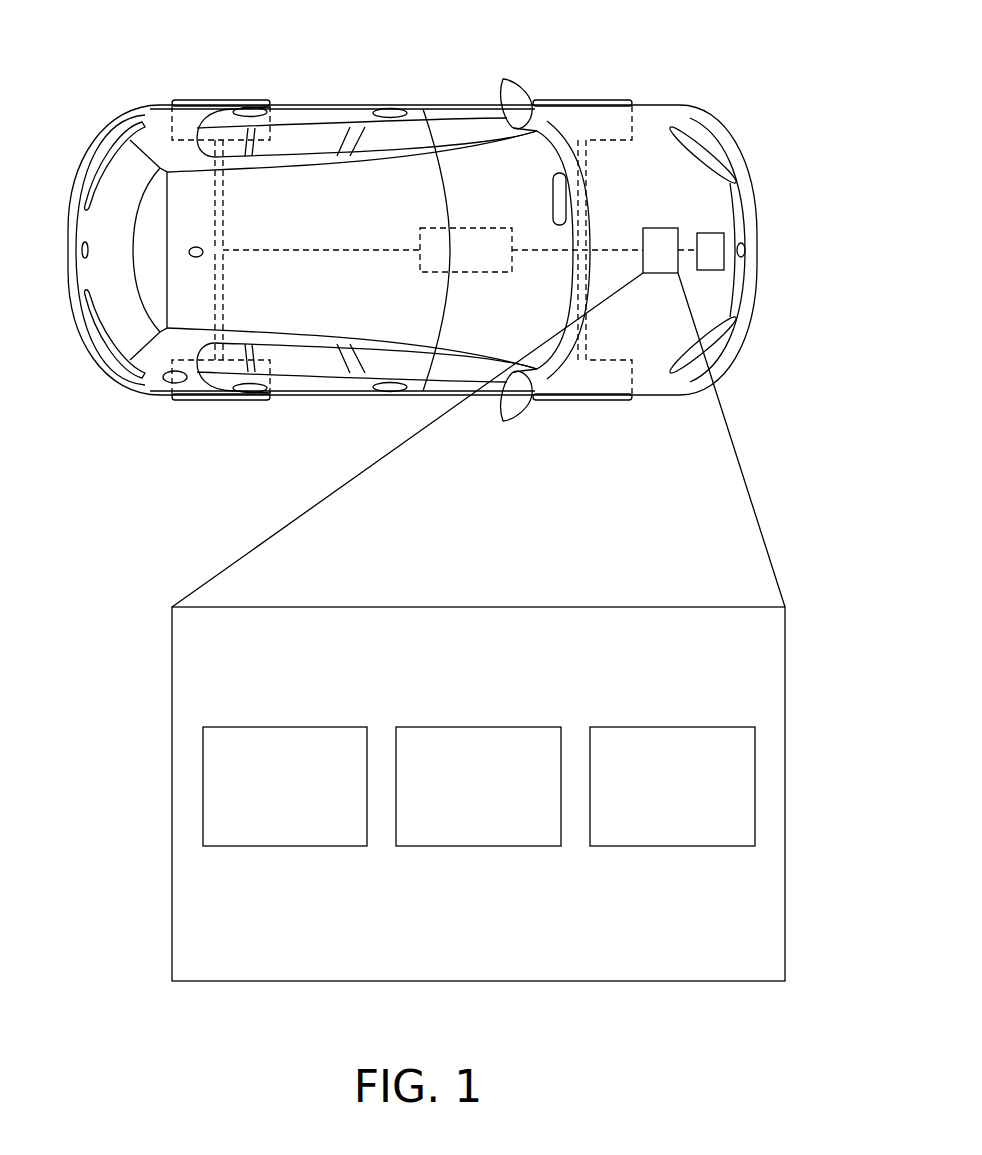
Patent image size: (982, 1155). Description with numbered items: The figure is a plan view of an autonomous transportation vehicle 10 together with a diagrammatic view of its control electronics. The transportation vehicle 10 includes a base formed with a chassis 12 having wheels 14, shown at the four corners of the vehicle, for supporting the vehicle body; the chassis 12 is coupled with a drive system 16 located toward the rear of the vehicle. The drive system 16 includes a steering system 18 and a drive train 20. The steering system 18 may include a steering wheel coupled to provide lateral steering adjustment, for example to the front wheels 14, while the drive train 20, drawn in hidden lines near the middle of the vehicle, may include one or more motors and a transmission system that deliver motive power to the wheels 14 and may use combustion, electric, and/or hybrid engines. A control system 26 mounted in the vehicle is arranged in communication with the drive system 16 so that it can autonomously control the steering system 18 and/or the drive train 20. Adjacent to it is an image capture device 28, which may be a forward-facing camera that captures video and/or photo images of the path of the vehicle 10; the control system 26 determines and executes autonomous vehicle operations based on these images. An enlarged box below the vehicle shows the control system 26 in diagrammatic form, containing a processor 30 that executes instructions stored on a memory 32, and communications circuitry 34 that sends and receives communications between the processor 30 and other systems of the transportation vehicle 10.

The transportation vehicle 10 is at (435, 493).
The chassis 12 is at (316, 100).
The wheels 14 is at (188, 102).
The drive system 16 is at (628, 176).
The steering system 18 is at (572, 170).
The drive train 20 is at (420, 220).
The control system 26 is at (443, 579).
The image capture device 28 is at (723, 237).
The processor 30 is at (310, 727).
The memory 32 is at (511, 727).
The communications circuitry 34 is at (716, 727).